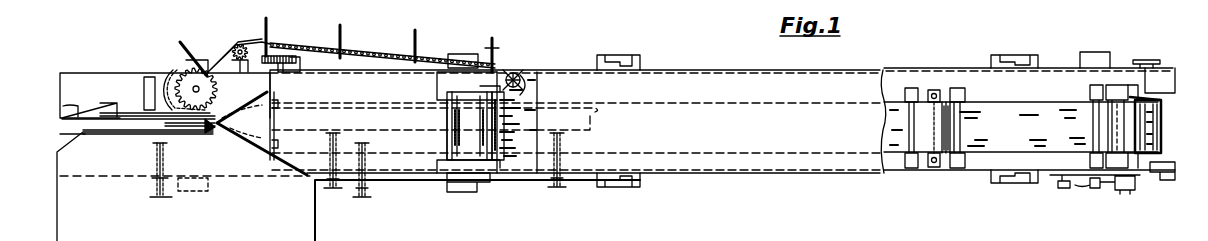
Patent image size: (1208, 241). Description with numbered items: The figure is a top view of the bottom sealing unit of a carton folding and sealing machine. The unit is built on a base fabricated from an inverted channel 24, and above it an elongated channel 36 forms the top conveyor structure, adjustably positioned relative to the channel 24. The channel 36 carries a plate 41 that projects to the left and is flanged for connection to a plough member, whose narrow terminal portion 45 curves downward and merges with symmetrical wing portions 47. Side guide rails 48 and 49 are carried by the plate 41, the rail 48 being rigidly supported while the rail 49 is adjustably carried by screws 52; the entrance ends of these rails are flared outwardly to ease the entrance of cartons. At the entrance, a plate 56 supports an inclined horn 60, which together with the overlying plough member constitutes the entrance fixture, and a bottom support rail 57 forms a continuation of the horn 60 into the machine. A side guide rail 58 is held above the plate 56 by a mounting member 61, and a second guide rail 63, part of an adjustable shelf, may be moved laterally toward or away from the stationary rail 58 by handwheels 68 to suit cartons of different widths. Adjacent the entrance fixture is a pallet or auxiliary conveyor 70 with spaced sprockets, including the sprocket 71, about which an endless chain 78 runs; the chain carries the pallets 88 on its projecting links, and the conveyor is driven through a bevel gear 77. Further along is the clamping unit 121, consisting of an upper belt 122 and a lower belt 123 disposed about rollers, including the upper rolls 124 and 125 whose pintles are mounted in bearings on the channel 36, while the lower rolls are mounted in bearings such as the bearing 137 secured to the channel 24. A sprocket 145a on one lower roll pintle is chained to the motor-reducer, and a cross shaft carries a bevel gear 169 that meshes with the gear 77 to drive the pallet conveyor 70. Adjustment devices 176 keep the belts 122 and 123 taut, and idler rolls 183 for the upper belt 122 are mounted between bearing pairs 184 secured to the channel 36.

The inverted channel 24 is at (1160, 64).
The elongated channel 36 is at (932, 78).
The plate 41 is at (405, 165).
The narrow terminal portion 45 is at (178, 126).
The wing portions 47 is at (235, 140).
The side guide rail 48 is at (368, 103).
The side guide rail 49 is at (406, 130).
The screws 52 is at (560, 165).
The plate 56 is at (85, 82).
The bottom support rail 57 is at (128, 115).
The side guide rail 58 is at (80, 100).
The inclined horn 60 is at (75, 106).
The mounting member 61 is at (152, 77).
The second guide rail 63 is at (130, 140).
The handwheels 68 is at (366, 200).
The pallet or auxiliary conveyor 70 is at (274, 35).
The sprocket 71 is at (202, 75).
The bevel gear 77 is at (525, 70).
The endless chain 78 is at (250, 42).
The pallets 88 is at (345, 20).
The clamping unit 121 is at (704, 44).
The belt 122 is at (1021, 127).
The belt 123 is at (1164, 135).
The upper roll 124 is at (455, 170).
The upper roll 125 is at (1157, 99).
The bearing 137 is at (1170, 166).
The sprocket 145a is at (1142, 60).
The bevel gear 169 is at (488, 90).
The adjustment devices 176 is at (927, 165).
The idler rolls 183 is at (1092, 105).
The bearing pairs 184 is at (492, 170).